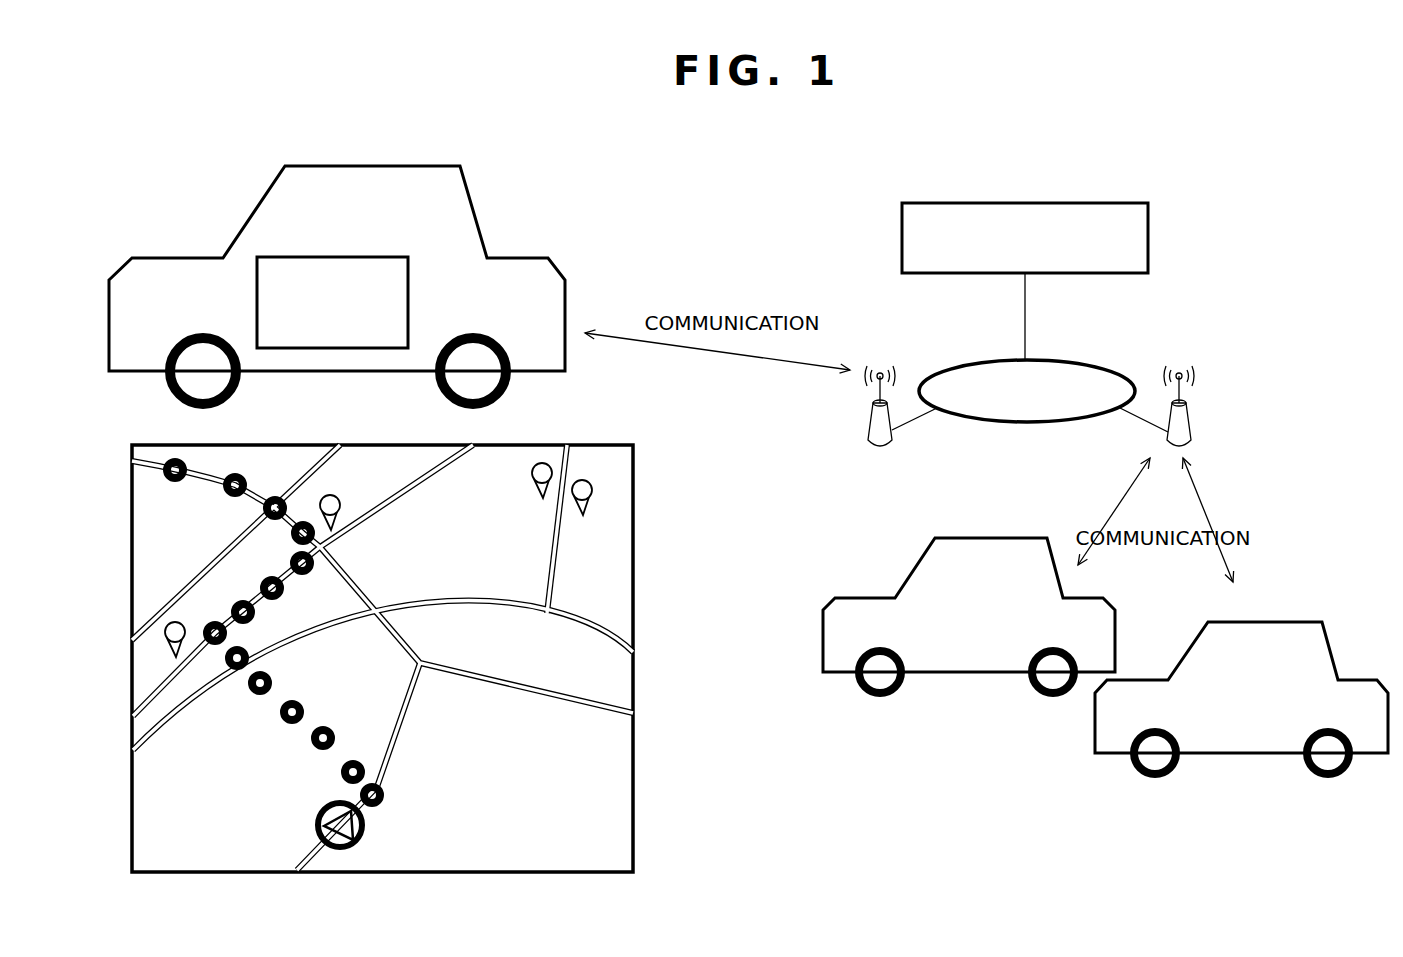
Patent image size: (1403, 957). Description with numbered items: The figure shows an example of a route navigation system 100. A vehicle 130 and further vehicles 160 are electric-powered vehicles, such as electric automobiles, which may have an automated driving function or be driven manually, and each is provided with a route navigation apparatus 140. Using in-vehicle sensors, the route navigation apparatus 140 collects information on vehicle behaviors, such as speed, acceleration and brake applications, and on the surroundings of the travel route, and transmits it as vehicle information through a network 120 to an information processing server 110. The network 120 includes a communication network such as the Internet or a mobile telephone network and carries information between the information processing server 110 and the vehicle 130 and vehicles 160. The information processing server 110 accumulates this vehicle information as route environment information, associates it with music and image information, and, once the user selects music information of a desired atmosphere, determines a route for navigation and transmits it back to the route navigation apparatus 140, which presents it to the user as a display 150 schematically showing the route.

The route navigation system 100 is at (893, 135).
The information processing server 110 is at (1070, 203).
The network 120 is at (1067, 363).
The vehicle 130 is at (337, 265).
The route navigation apparatus 140 is at (410, 312).
The display 150 is at (637, 467).
The vehicles 160 is at (972, 538).